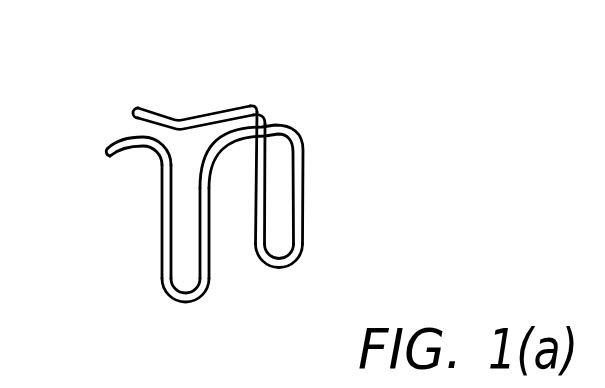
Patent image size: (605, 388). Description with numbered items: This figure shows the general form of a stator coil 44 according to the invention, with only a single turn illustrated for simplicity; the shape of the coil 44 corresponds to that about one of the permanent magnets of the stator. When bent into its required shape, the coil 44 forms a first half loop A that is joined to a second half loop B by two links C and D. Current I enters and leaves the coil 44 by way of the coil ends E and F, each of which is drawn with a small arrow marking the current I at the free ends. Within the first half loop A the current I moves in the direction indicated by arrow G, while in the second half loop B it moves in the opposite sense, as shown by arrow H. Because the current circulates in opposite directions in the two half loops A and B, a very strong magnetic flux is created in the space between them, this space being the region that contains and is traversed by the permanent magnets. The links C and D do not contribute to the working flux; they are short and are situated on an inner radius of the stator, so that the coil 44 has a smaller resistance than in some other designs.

The coil 44 is at (389, 101).
The first half loop A is at (184, 212).
The second half loop B is at (278, 189).
The link C is at (210, 107).
The link D is at (268, 123).
The coil end E is at (104, 153).
The coil end F is at (130, 110).
The arrow G is at (174, 314).
The arrow H is at (274, 286).
The current I is at (138, 97).